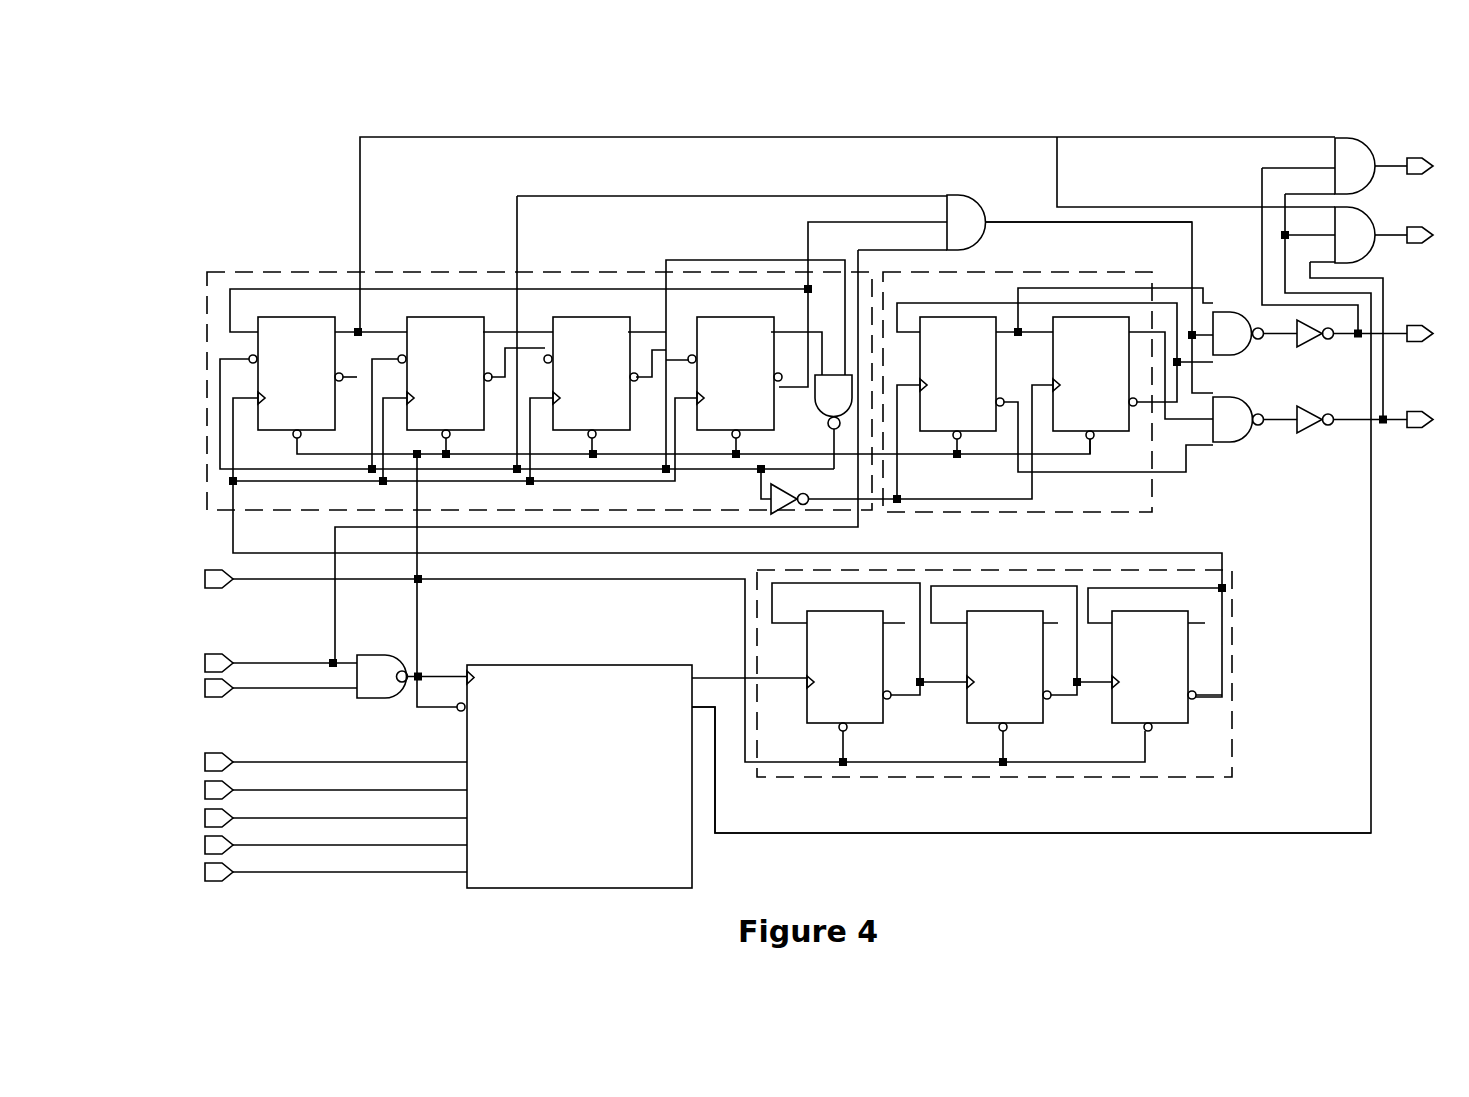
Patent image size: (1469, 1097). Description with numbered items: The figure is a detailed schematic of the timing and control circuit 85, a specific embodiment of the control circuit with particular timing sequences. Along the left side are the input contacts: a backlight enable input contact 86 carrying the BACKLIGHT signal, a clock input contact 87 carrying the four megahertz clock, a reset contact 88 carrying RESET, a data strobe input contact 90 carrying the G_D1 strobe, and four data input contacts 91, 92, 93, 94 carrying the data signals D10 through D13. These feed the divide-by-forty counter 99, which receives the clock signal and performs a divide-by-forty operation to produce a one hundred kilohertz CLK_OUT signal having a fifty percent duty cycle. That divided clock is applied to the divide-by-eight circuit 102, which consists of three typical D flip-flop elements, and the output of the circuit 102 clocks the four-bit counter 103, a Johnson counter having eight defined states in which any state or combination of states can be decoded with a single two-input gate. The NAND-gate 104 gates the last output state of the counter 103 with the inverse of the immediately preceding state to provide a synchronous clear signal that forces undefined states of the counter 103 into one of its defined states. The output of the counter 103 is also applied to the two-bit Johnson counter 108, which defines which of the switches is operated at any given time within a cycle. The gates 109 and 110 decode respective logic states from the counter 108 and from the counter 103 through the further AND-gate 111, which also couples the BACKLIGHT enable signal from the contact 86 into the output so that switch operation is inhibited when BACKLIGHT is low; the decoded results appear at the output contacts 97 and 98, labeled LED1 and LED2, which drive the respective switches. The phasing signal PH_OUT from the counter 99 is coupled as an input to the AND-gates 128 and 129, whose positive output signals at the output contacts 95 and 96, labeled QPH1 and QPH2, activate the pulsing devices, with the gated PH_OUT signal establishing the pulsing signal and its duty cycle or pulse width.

The timing and control circuit 85 is at (943, 833).
The backlight enable input contact 86 is at (263, 663).
The clock input contact 87 is at (260, 688).
The reset contact 88 is at (247, 579).
The G_D1 data input 90 is at (412, 762).
The data input contact 91 is at (375, 790).
The data input contact 92 is at (340, 818).
The data input contact 93 is at (297, 845).
The data input contact 94 is at (263, 872).
The output contact 95 is at (1415, 160).
The output contact 96 is at (1415, 245).
The output contact 97 is at (1415, 328).
The output contact 98 is at (1415, 413).
The divide by 40 counter 99 is at (575, 888).
The divide-by-eight circuit 102 is at (1135, 777).
The 4-bit counter 103 is at (378, 272).
The NAND-gate 104 is at (835, 392).
The 2-bit Johnson counter 108 is at (1045, 272).
The gate 109 is at (1225, 320).
The gate 110 is at (1226, 422).
The AND-gate 111 is at (957, 225).
The AND-gate 128 is at (1357, 165).
The AND-gate 129 is at (1353, 235).